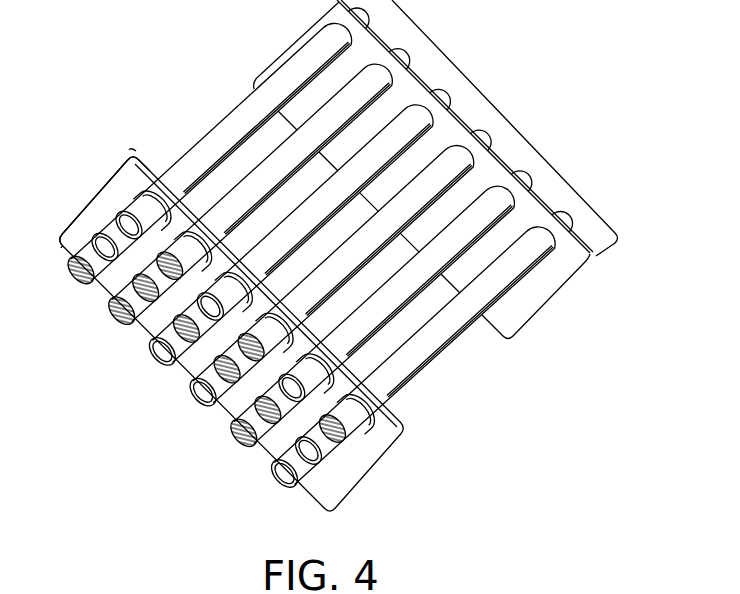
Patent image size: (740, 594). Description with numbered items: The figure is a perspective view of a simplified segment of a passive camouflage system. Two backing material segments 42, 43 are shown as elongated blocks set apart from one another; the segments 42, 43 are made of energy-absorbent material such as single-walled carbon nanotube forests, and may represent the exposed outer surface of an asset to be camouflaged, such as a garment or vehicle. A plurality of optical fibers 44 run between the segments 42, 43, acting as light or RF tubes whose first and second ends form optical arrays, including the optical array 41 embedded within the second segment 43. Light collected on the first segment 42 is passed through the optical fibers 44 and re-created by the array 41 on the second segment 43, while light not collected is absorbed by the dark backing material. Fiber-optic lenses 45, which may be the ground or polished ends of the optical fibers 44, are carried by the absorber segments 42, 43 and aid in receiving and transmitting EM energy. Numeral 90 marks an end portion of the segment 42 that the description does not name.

The optical array 41 is at (495, 100).
The backing material segment 42 is at (368, 452).
The backing material segment 43 is at (553, 293).
The optical fiber 44 is at (432, 338).
The fiber-optic lens 45 is at (162, 358).
The end cap 90 is at (95, 185).